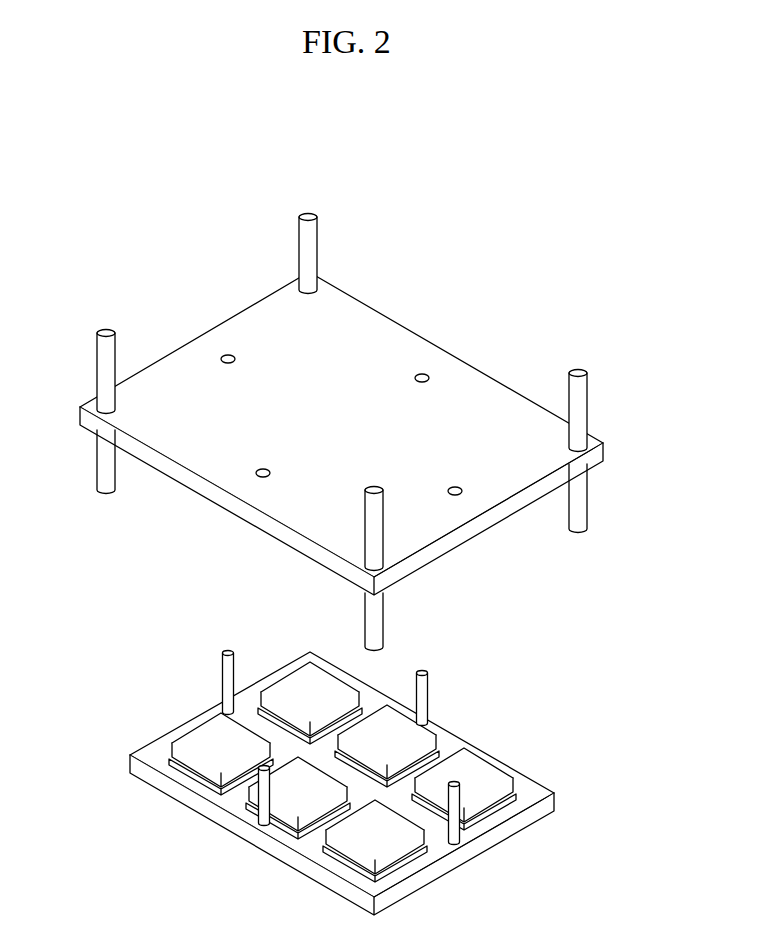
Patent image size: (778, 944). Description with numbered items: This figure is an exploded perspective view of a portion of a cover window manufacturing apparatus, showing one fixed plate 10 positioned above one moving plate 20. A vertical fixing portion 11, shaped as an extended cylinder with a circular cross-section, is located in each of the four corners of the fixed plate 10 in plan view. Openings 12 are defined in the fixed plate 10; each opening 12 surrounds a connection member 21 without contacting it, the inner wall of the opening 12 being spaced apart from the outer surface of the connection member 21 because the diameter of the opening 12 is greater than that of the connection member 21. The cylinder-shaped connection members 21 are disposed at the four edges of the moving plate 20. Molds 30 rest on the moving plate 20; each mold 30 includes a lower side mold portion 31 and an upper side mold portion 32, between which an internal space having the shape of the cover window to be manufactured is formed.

The fixed plate 10 is at (270, 305).
The vertical fixing portion 11 is at (97, 365).
The opening 12 is at (222, 357).
The moving plate 20 is at (543, 788).
The connection member 21 is at (222, 673).
The mold 30 is at (291, 772).
The lower side mold portion 31 is at (195, 775).
The upper side mold portion 32 is at (172, 750).